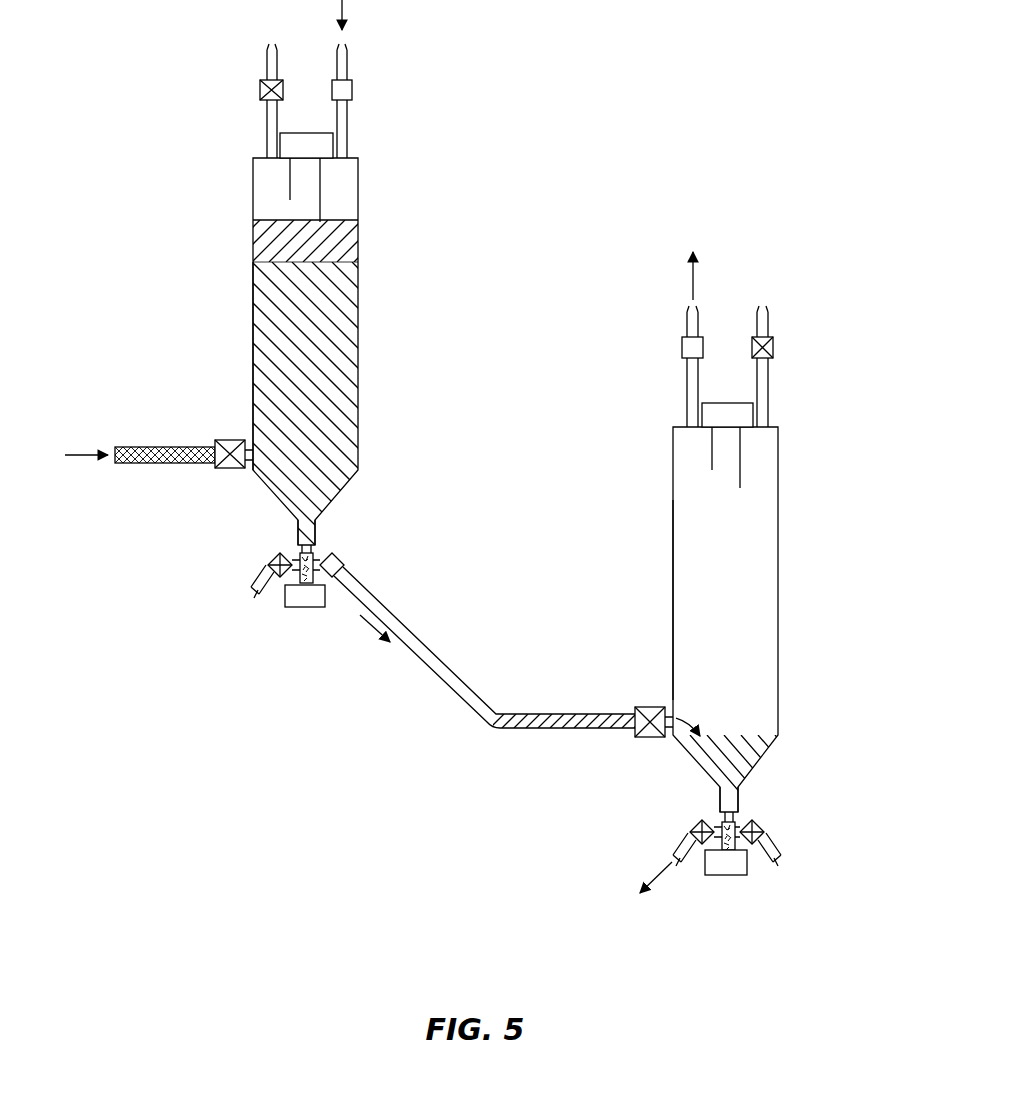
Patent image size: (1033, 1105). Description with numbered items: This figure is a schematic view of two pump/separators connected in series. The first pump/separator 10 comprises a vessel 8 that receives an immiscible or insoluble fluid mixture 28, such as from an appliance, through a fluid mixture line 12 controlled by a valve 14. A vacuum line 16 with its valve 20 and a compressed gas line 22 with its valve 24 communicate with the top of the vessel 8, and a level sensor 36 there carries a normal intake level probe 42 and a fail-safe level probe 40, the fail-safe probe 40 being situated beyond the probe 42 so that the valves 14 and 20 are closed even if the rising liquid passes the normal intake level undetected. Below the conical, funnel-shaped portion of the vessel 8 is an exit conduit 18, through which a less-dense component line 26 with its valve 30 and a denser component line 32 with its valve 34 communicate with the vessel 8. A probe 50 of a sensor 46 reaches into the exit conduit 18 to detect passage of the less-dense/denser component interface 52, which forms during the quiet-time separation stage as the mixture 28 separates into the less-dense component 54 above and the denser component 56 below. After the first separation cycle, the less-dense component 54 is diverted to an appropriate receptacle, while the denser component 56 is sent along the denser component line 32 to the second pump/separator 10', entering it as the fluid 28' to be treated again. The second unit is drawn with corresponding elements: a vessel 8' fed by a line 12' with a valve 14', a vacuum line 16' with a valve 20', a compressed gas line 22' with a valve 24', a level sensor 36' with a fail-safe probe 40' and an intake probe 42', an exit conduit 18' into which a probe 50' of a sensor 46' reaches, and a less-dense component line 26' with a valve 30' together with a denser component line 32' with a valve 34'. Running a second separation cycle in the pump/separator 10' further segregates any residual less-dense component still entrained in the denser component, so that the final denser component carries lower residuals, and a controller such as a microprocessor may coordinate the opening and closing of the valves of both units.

The vessel 8 is at (214, 366).
The pump/separator 10 is at (220, 351).
The immiscible or insoluble fluid mixture line 12 is at (163, 478).
The valve 14 is at (220, 435).
The vacuum line 16 is at (241, 101).
The exit conduit 18 is at (250, 519).
The valve 20 is at (242, 92).
The compressed gas line 22 is at (372, 101).
The valve 24 is at (370, 92).
The less-dense component line 26 is at (236, 581).
The immiscible or insoluble fluid mixture 28 is at (69, 455).
The valve 30 is at (242, 543).
The denser component line 32 is at (484, 647).
The valve 34 is at (363, 541).
The level sensor 36 is at (306, 81).
The fail-safe level probe 40 is at (232, 183).
The normal intake level probe 42 is at (247, 196).
The sensor 46 is at (288, 624).
The probe 50 is at (350, 527).
The less-dense/denser component interface 52 is at (283, 262).
The less-dense component 54 is at (358, 232).
The denser component 56 is at (332, 378).
The second vessel 8' is at (638, 600).
The second pump/separator 10' is at (791, 619).
The second inlet conduit 12' is at (569, 746).
The second inlet valve 14' is at (644, 696).
The first gas tube of second vessel 16' is at (660, 366).
The second outlet neck 18' is at (670, 787).
The first gas valve of second vessel 20' is at (661, 350).
The second gas tube of second vessel 22' is at (794, 366).
The second gas valve of second vessel 24' is at (794, 348).
The outlet conduit of second vessel 26' is at (654, 863).
The transferred material 28' is at (761, 748).
The outlet valve of second vessel 30' is at (658, 827).
The second outlet conduit of second vessel 32' is at (795, 849).
The second outlet valve of second vessel 34' is at (791, 825).
The cap of second vessel 36' is at (729, 360).
The first inner tube of second vessel 40' is at (651, 453).
The second inner tube of second vessel 42' is at (802, 457).
The sensor housing of second vessel 46' is at (748, 887).
The filter of second vessel 50' is at (671, 819).